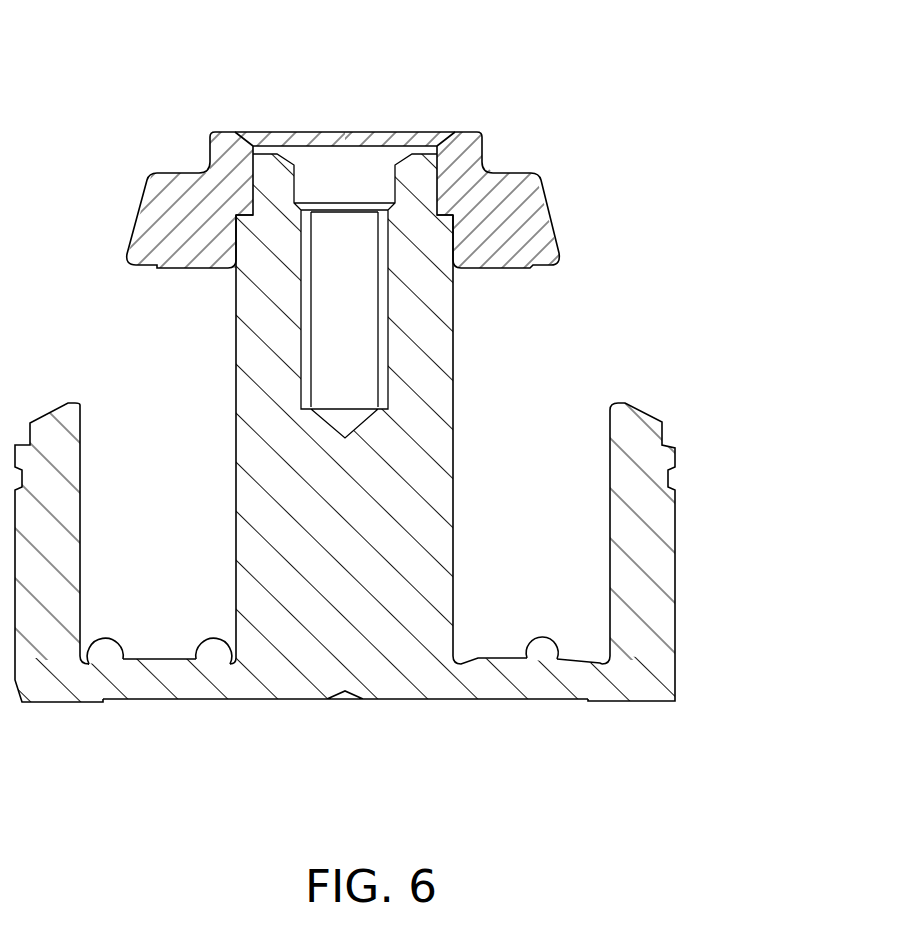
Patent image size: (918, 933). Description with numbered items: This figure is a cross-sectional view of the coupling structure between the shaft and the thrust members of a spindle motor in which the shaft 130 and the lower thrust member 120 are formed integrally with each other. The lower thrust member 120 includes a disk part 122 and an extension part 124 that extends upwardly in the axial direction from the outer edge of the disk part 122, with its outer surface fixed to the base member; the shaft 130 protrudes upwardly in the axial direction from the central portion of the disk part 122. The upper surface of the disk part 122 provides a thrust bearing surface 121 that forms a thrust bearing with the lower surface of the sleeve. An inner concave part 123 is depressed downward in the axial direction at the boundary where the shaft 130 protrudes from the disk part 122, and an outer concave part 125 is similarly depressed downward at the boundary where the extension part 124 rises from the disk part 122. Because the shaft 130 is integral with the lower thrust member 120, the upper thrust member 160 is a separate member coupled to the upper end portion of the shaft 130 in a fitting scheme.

The lower thrust member 120 is at (768, 528).
The thrust bearing surface 121 is at (543, 644).
The disk part 122 is at (583, 680).
The inner concave part 123 is at (200, 657).
The extension part 124 is at (650, 540).
The outer concave part 125 is at (113, 656).
The shaft 130 is at (423, 243).
The upper thrust member 160 is at (495, 188).